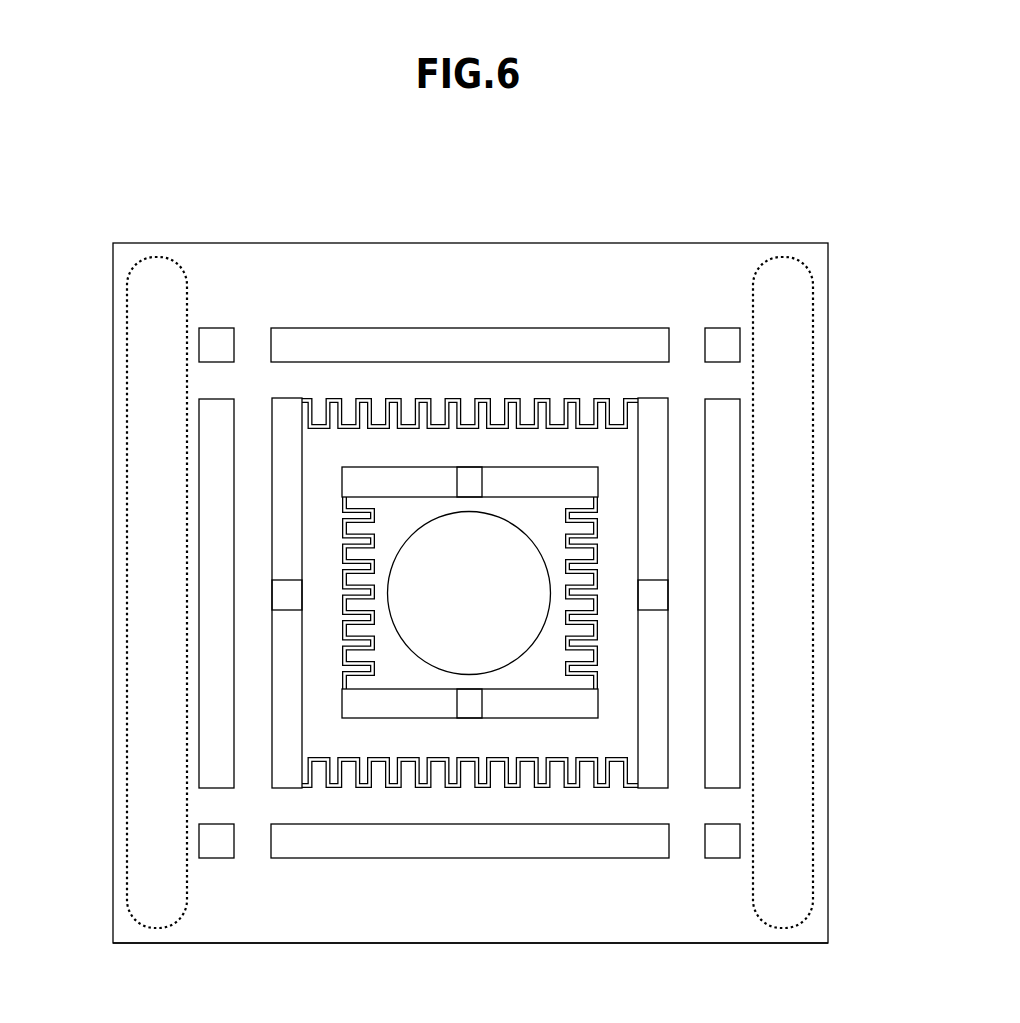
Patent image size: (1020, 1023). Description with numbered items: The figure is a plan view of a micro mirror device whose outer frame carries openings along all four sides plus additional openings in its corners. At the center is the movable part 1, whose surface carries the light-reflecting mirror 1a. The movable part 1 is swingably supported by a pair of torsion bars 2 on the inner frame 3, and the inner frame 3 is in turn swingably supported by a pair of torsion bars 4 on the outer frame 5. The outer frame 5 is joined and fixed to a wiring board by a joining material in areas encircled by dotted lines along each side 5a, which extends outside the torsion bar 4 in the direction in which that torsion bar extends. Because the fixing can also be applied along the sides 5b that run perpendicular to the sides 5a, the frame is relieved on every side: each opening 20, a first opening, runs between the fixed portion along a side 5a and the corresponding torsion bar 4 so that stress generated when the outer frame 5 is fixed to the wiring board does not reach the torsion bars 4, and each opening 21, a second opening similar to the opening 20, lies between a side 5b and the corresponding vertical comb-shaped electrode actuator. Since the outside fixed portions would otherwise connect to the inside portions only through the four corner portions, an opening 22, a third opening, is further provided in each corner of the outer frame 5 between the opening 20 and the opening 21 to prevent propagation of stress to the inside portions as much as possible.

The movable part 1 is at (402, 517).
The mirror 1a is at (425, 557).
The torsion bars 2 is at (483, 482).
The inner frame 3 is at (603, 727).
The torsion bars 4 is at (655, 607).
The outer frame 5 is at (775, 555).
The side of the outer frame 5a is at (828, 470).
The sides perpendicular to the sides 5a 5b is at (633, 943).
The openings 20 is at (215, 458).
The opening 21 is at (417, 343).
The opening 22 is at (215, 345).